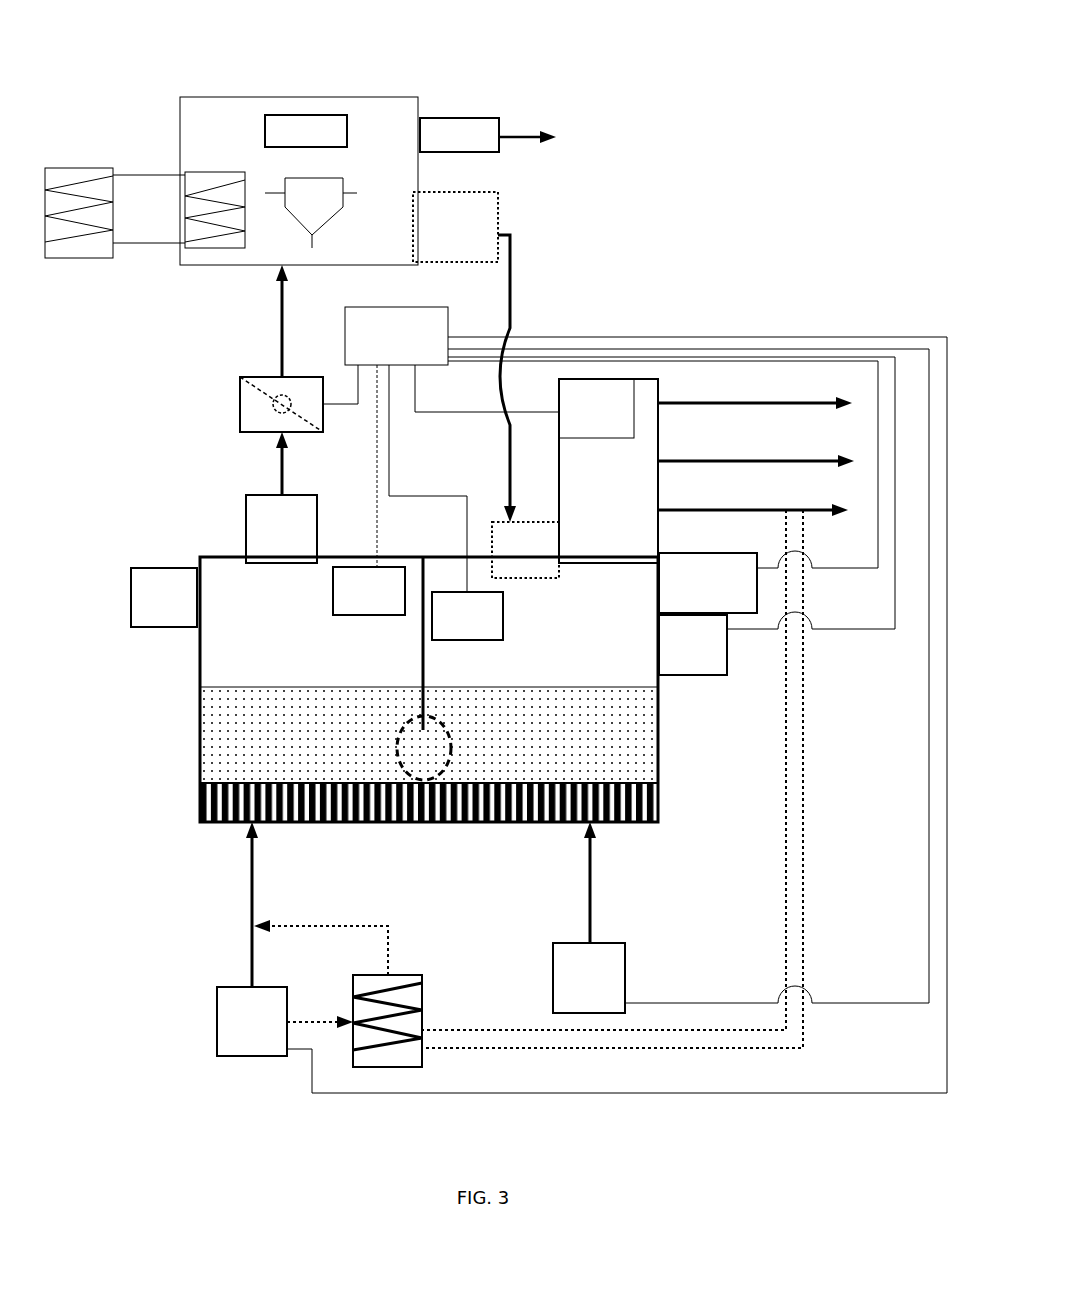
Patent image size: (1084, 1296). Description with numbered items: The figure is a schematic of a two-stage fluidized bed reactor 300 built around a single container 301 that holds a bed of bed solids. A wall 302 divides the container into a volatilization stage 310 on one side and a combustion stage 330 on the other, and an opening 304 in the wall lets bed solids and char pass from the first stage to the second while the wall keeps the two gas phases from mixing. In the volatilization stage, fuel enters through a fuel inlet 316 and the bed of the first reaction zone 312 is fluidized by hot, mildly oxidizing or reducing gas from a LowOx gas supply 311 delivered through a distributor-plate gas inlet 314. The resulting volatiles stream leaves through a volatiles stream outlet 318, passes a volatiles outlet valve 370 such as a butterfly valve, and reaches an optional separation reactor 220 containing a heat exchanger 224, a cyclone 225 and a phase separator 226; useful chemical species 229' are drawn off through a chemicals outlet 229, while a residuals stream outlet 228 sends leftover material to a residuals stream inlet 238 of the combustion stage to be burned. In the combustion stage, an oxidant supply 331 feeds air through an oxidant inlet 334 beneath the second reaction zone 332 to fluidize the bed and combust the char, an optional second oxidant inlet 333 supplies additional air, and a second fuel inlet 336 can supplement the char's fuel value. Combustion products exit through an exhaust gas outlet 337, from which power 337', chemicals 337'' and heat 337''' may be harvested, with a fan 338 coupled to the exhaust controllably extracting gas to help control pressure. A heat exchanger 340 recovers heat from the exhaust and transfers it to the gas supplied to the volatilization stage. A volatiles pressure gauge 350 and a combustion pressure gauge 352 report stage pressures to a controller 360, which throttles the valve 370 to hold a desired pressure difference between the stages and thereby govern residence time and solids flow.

The fluidized bed reactor 300 is at (662, 58).
The separation reactor 220 is at (333, 97).
The heat exchanger 224 is at (102, 168).
The cyclone 225 is at (293, 204).
The phase separator 226 is at (286, 142).
The residuals stream outlet 228 is at (455, 227).
The chemicals outlet 229 is at (459, 135).
The useful chemical species 229' is at (553, 138).
The residuals stream inlet 238 is at (506, 561).
The container 301 is at (658, 740).
The wall 302 is at (420, 663).
The opening 304 is at (450, 725).
The volatilization stage 310 is at (229, 618).
The LowOx gas supply 311 is at (217, 1030).
The first reaction zone 312 is at (263, 743).
The gas inlet 314 is at (200, 803).
The fuel inlet 316 is at (145, 608).
The volatiles stream outlet 318 is at (263, 551).
The combustion stage 330 is at (581, 618).
The oxidant supply 331 is at (625, 967).
The second reaction zone 332 is at (544, 741).
The second oxidant inlet 333 is at (689, 594).
The oxidant inlet 334 is at (660, 808).
The second fuel inlet 336 is at (673, 656).
The exhaust gas outlet 337 is at (608, 471).
The power 337' is at (755, 394).
The chemicals 337'' is at (756, 447).
The heat 337''' is at (753, 496).
The fan 338 is at (581, 421).
The heat exchanger 340 is at (422, 995).
The volatiles pressure gauge 350 is at (350, 602).
The combustion pressure gauge 352 is at (448, 627).
The controller 360 is at (380, 346).
The volatiles outlet valve 370 is at (240, 404).